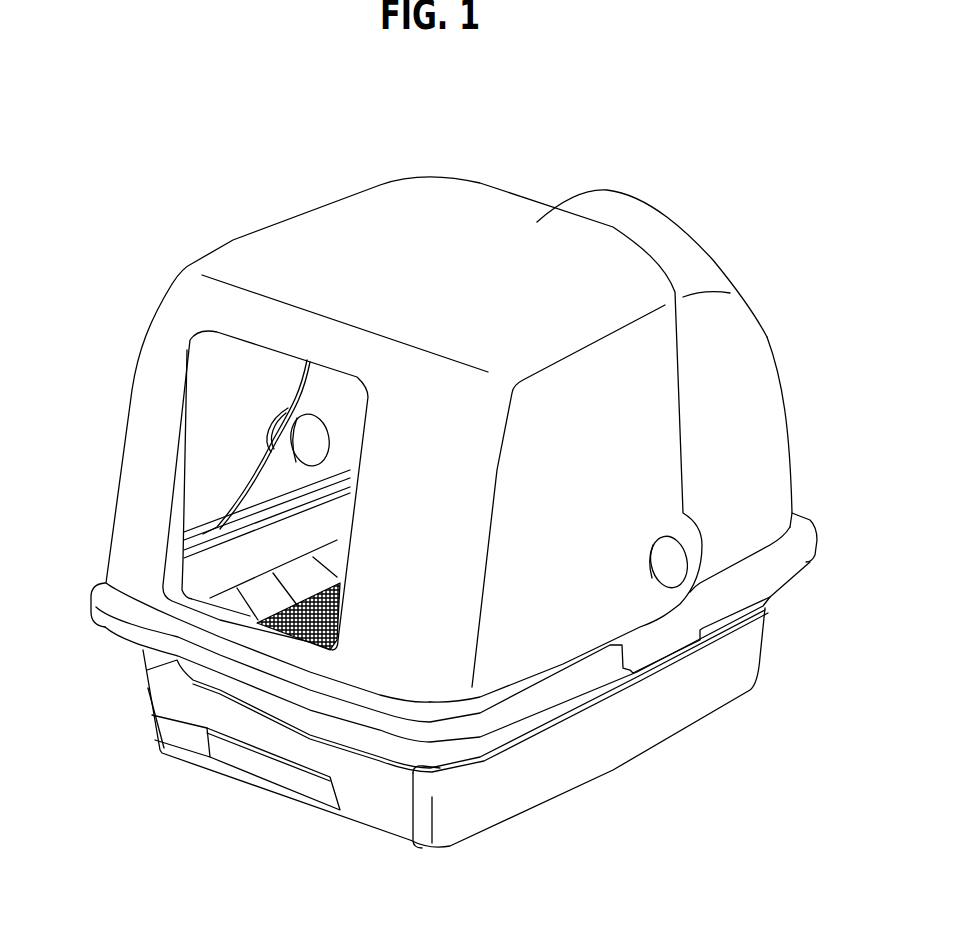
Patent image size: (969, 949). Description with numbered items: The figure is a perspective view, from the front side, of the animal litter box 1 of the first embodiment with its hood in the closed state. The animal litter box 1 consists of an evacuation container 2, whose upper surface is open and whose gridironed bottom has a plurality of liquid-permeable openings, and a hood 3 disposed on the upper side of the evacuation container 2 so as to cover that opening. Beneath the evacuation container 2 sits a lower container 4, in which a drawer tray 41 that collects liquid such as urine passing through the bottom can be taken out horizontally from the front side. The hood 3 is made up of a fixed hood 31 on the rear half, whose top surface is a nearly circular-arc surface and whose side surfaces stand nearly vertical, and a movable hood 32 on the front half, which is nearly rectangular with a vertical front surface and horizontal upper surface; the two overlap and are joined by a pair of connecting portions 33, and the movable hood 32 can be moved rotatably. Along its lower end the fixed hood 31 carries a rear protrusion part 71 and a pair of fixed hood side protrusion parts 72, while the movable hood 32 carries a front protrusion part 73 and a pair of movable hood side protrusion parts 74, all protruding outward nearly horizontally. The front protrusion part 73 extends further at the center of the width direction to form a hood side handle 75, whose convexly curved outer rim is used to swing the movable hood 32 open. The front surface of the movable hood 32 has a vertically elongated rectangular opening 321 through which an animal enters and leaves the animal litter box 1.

The animal litter box 1 is at (322, 168).
The evacuation container 2 is at (322, 727).
The hood 3 is at (822, 263).
The lower container 4 is at (493, 803).
The fixed hood 31 is at (688, 278).
The movable hood 32 is at (645, 214).
The connecting portion 33 is at (673, 562).
The drawer tray 41 is at (372, 805).
The rear protrusion part 71 is at (793, 514).
The fixed hood side protrusion part 72 is at (708, 592).
The front protrusion part 73 is at (143, 618).
The movable hood side protrusion part 74 is at (533, 678).
The hood side handle 75 is at (238, 683).
The opening 321 is at (176, 498).